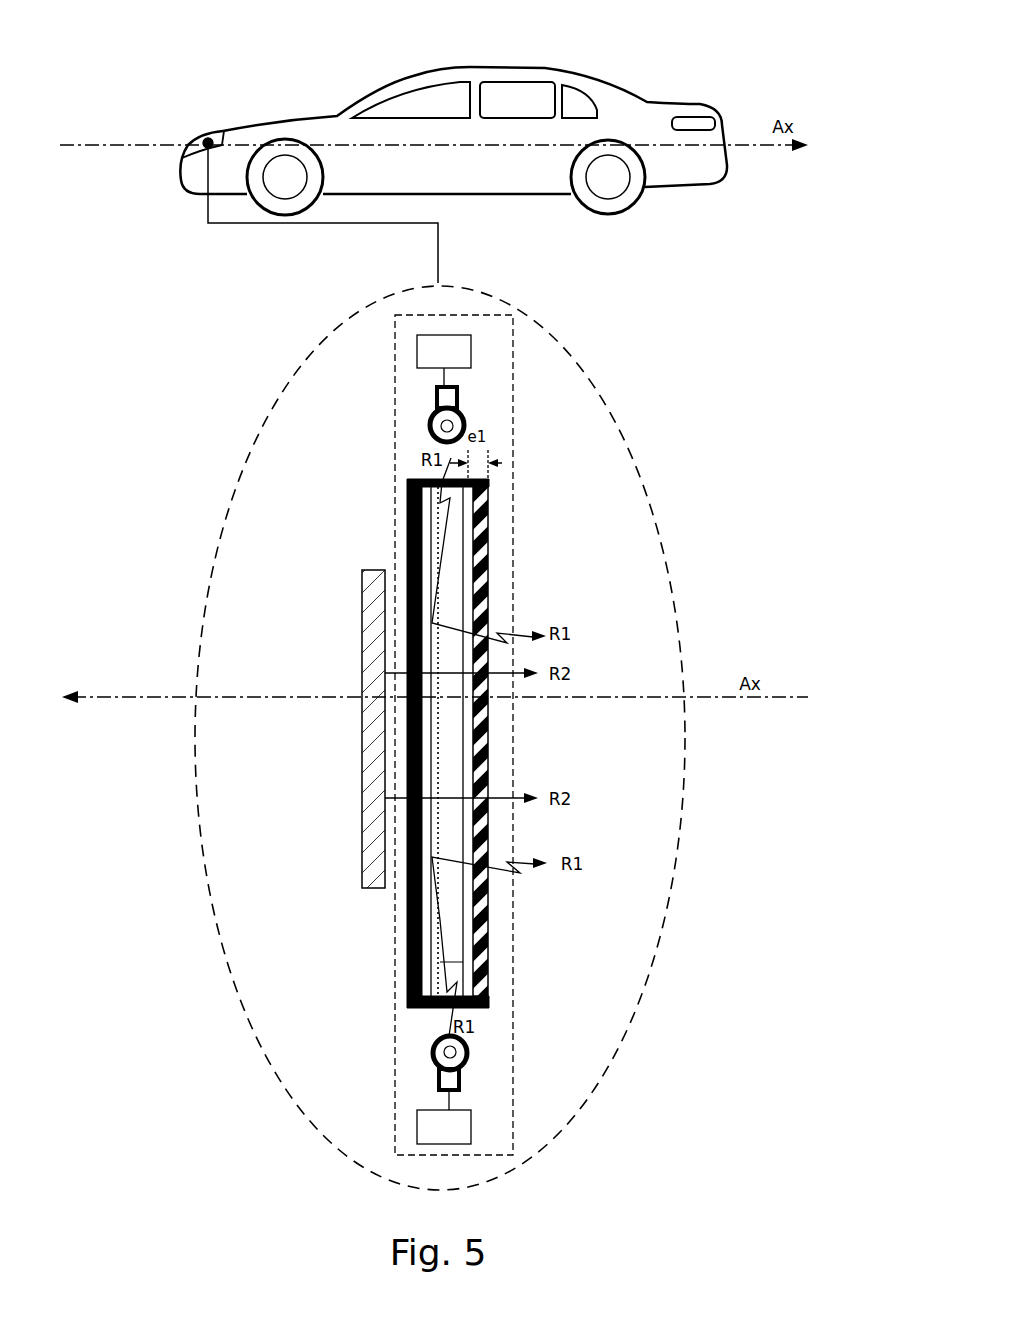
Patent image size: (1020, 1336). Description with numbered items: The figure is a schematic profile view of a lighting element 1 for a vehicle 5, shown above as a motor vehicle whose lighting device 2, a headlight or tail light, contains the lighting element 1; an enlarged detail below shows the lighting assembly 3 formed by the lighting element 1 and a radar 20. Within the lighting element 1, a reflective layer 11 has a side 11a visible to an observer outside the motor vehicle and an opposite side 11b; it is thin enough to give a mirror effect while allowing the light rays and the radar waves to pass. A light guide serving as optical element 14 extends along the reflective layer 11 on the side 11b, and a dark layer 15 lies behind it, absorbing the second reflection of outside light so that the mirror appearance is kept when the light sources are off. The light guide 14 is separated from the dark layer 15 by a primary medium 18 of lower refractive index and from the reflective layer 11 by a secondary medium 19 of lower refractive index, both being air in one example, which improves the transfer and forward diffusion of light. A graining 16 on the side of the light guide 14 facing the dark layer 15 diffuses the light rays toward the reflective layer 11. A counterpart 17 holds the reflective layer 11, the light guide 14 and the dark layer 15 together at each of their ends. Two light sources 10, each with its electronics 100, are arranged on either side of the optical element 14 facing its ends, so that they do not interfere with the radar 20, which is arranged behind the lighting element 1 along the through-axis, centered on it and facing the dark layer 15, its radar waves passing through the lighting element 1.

The lighting element 1 is at (513, 444).
The lighting device 2 is at (205, 138).
The lighting assembly 3 is at (494, 296).
The vehicle 5 is at (316, 78).
The light source 10 is at (430, 413).
The reflective layer 11 is at (490, 495).
The side of the reflective layer 11a is at (501, 549).
The side of the reflective layer 11b is at (460, 549).
The optical element 14 is at (450, 723).
The dark layer 15 is at (405, 920).
The graining 16 is at (440, 962).
The counterpart 17 is at (412, 478).
The primary medium 18 is at (428, 780).
The secondary medium 19 is at (464, 605).
The radar 20 is at (326, 642).
The electronics 100 is at (444, 739).